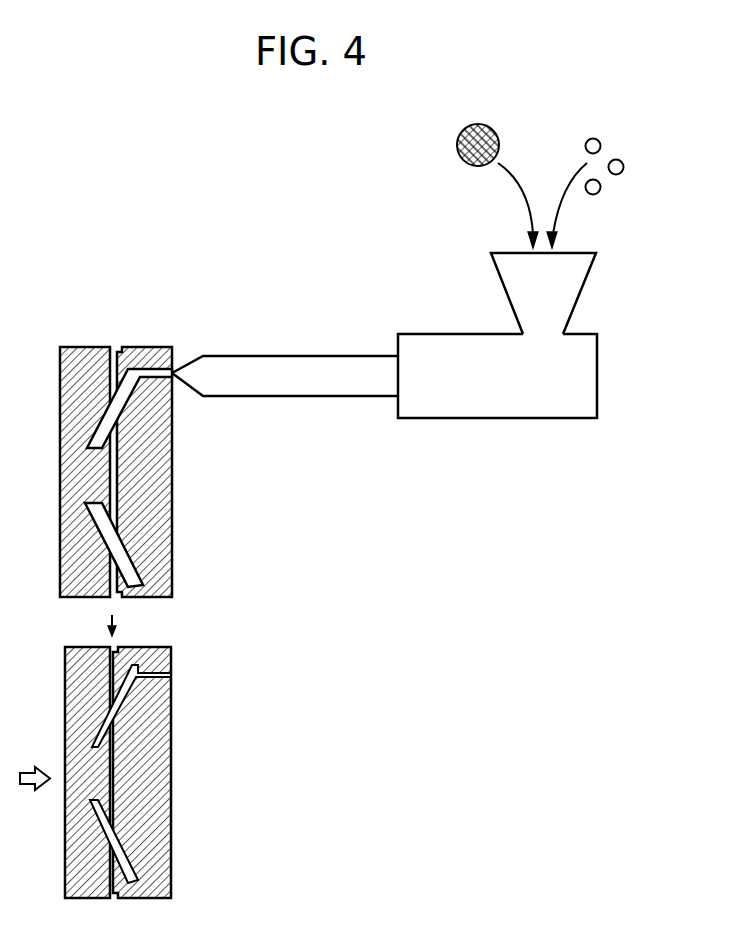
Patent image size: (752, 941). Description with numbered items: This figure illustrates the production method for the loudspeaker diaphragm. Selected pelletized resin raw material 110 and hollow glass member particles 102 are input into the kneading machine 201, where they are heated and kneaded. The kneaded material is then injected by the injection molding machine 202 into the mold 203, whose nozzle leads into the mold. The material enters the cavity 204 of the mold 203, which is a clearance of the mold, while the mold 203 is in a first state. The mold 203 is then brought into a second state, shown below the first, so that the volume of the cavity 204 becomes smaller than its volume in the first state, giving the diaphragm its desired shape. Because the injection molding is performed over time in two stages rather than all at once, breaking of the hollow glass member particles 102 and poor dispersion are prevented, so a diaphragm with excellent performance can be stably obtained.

The pelletized resin raw material 110 is at (458, 143).
The hollow glass member particles 102 is at (596, 137).
The kneading machine 201 is at (498, 420).
The injection molding machine 202 is at (277, 398).
The mold 203 is at (172, 500).
The cavity 204 is at (117, 556).